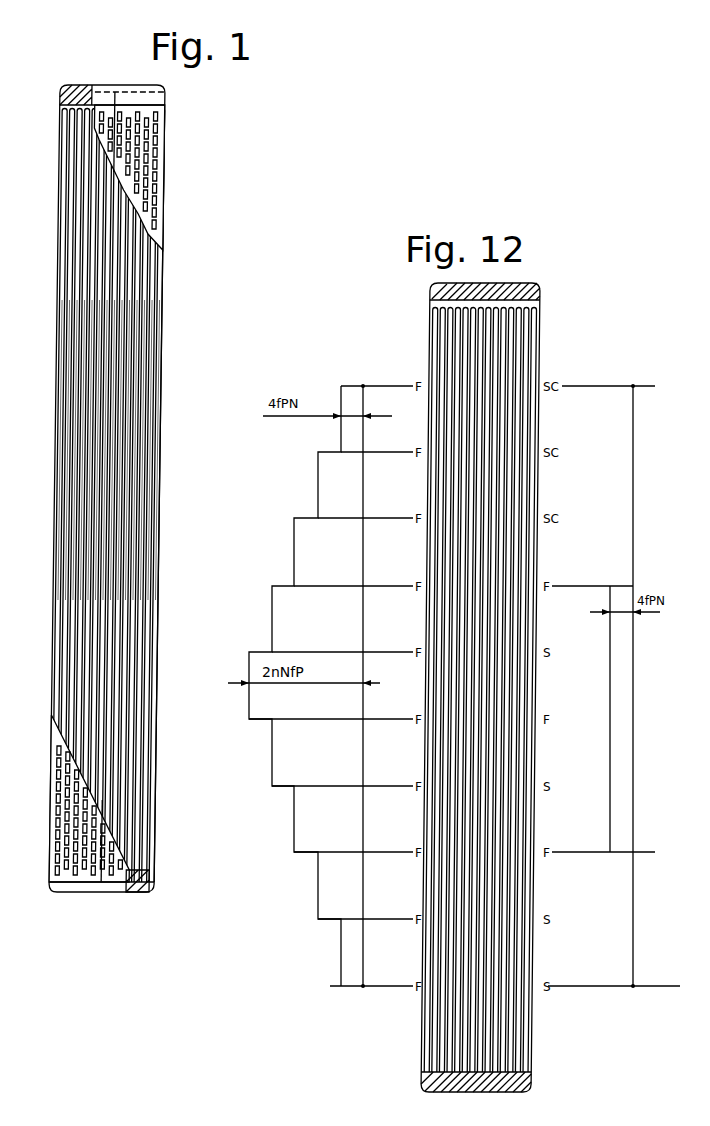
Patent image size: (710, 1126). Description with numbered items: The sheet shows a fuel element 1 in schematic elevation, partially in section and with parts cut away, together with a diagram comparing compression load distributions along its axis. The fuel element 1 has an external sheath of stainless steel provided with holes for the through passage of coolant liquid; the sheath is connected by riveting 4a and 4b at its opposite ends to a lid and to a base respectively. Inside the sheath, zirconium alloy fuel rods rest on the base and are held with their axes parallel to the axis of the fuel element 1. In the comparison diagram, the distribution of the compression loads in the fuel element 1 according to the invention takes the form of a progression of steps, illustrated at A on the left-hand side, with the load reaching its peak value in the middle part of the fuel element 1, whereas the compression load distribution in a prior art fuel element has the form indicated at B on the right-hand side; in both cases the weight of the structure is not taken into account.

In FIG. 1, the fuel element 1 is at (131, 488).
In FIG. 12, the fuel element 1 is at (536, 1050).
In FIG. 1, the riveting 4a is at (138, 100).
In FIG. 1, the riveting 4b is at (148, 886).
In FIG. 12, the progression of steps A is at (270, 618).
In FIG. 12, the compression load distribution diagram B is at (642, 578).